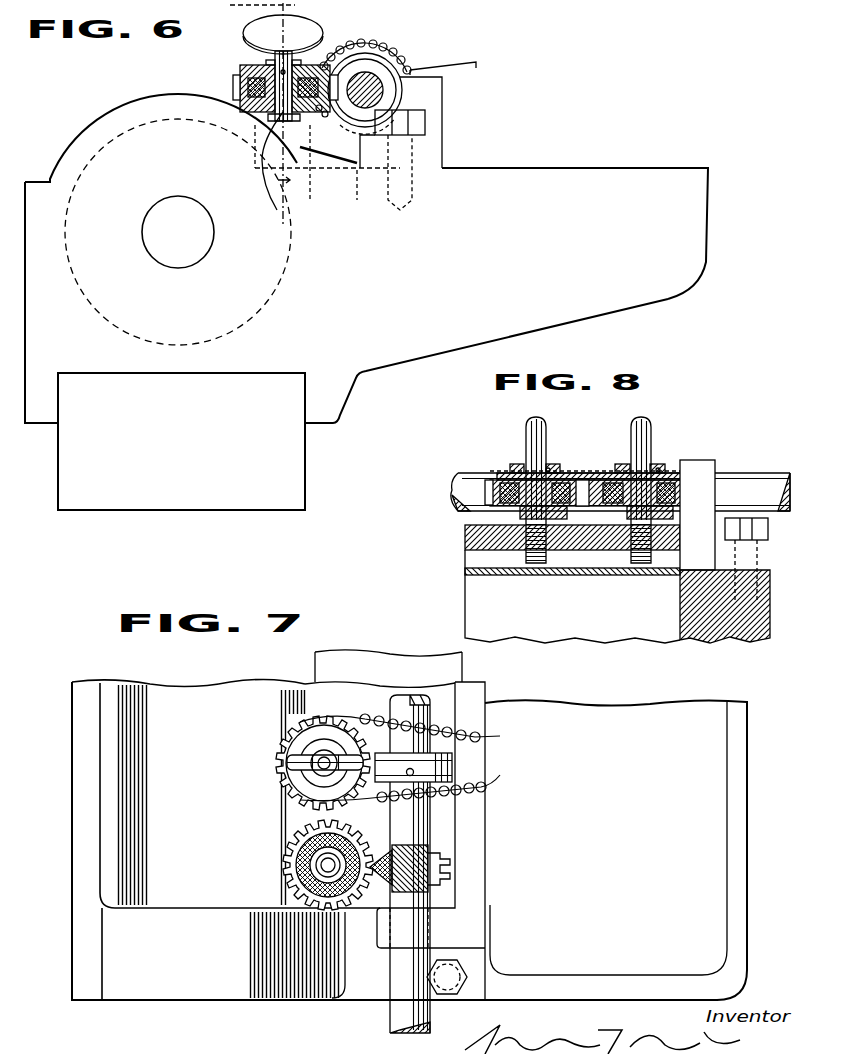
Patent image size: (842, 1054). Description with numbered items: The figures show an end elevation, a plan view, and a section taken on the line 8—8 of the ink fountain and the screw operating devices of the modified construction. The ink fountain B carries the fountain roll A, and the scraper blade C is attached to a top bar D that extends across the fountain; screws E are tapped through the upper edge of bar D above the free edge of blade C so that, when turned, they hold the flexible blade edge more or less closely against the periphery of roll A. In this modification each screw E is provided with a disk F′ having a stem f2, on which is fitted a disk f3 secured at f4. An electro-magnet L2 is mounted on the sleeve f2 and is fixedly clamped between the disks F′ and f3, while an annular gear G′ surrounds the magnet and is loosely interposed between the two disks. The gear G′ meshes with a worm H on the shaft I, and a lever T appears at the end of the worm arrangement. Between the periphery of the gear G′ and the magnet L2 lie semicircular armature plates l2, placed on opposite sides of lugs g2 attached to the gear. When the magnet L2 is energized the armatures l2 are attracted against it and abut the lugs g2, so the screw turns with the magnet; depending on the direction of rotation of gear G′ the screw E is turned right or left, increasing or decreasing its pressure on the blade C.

In FIG. 6, the fountain roll A is at (290, 253).
In FIG. 7, the fountain roll A is at (278, 839).
In FIG. 6, the ink fountain B is at (575, 233).
In FIG. 8, the ink fountain B is at (712, 646).
In FIG. 7, the ink fountain B is at (616, 850).
In FIG. 6, the scraper blade C is at (336, 176).
In FIG. 8, the scraper blade C is at (500, 576).
In FIG. 7, the scraper blade C is at (318, 660).
In FIG. 6, the top bar D is at (417, 143).
In FIG. 8, the top bar D is at (465, 571).
In FIG. 7, the top bar D is at (487, 835).
In FIG. 6, the screw E is at (280, 112).
In FIG. 8, the screw E is at (537, 428).
In FIG. 7, the screw E is at (300, 768).
In FIG. 6, the disk F′ is at (317, 40).
In FIG. 8, the disk F′ is at (516, 465).
In FIG. 7, the disk F′ is at (290, 762).
In FIG. 6, the annular gear G′ is at (246, 92).
In FIG. 8, the annular gear G′ is at (487, 487).
In FIG. 7, the annular gear G′ is at (313, 733).
In FIG. 6, the worm H is at (400, 40).
In FIG. 7, the worm H is at (473, 758).
In FIG. 6, the shaft I is at (384, 93).
In FIG. 8, the shaft I is at (452, 494).
In FIG. 7, the shaft I is at (432, 900).
In FIG. 6, the lever T is at (470, 62).
In FIG. 6, the electro-magnet L2 is at (258, 112).
In FIG. 8, the electro-magnet L2 is at (590, 478).
In FIG. 6, the armature plate l2 is at (248, 70).
In FIG. 7, the armature plate l2 is at (355, 846).
In FIG. 6, the stem f2 is at (312, 126).
In FIG. 8, the stem f2 is at (530, 565).
In FIG. 7, the stem f2 is at (292, 880).
In FIG. 6, the disk f3 is at (252, 150).
In FIG. 8, the disk f3 is at (468, 530).
In FIG. 6, the securing point f4 is at (280, 72).
In FIG. 8, the securing point f4 is at (552, 466).
In FIG. 8, the lug g2 is at (506, 482).
In FIG. 7, the lug g2 is at (300, 842).
In FIG. 6, the section line 8 is at (304, 114).